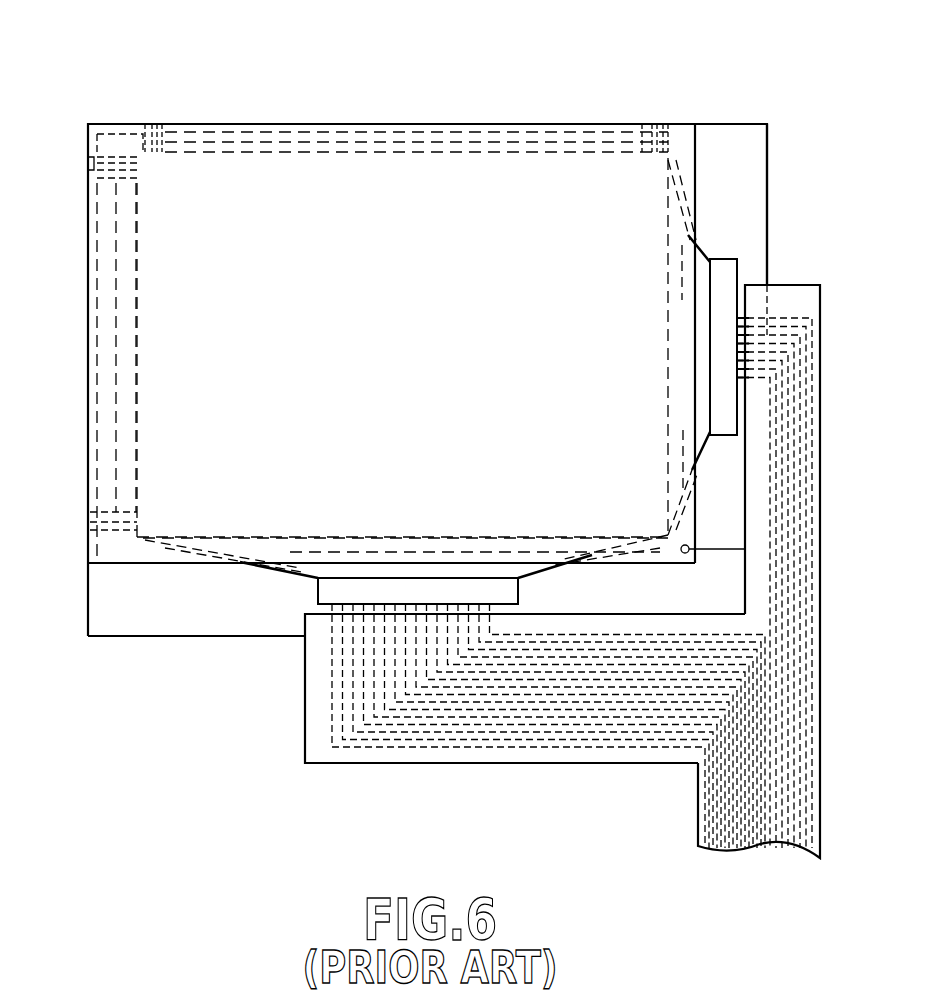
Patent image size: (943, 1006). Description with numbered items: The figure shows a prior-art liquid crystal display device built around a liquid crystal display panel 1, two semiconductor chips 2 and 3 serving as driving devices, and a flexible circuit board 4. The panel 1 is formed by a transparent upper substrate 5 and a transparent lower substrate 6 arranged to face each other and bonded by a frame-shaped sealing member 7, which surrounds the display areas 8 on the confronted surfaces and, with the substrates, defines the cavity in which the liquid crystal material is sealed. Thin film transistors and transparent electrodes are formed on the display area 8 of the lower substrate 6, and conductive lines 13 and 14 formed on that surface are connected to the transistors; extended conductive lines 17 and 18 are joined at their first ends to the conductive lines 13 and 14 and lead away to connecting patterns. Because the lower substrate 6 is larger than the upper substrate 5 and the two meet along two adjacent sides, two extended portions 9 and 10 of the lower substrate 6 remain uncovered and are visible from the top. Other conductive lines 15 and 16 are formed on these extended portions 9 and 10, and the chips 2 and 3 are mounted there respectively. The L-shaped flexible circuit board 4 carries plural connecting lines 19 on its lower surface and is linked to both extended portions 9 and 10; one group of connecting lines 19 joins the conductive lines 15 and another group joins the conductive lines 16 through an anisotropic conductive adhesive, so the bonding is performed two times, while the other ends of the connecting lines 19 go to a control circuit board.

The liquid crystal display panel 1 is at (549, 121).
The semiconductor chip 2 is at (322, 590).
The semiconductor chip 3 is at (726, 283).
The flexible circuit board 4 is at (823, 665).
The upper substrate 5 is at (460, 123).
The lower substrate 6 is at (771, 150).
The sealing member 7 is at (111, 134).
The display area 8 is at (305, 178).
The extended portion 9 is at (138, 628).
The extended portion 10 is at (758, 190).
The conductive lines 13 is at (170, 545).
The conductive lines 14 is at (704, 256).
The conductive lines 15 is at (333, 623).
The conductive lines 16 is at (754, 389).
The extended conductive lines 17 is at (130, 134).
The extended conductive lines 18 is at (86, 158).
The connecting lines 19 is at (625, 742).